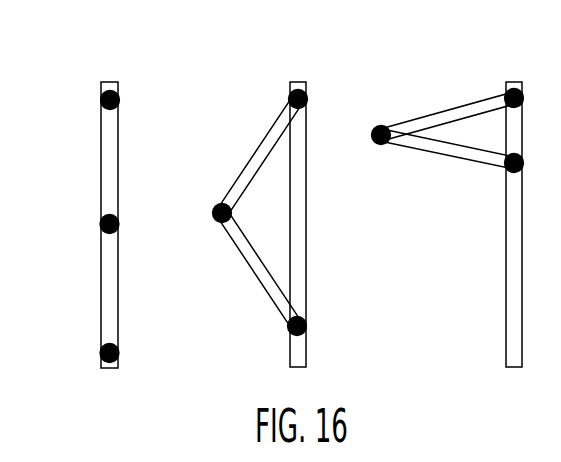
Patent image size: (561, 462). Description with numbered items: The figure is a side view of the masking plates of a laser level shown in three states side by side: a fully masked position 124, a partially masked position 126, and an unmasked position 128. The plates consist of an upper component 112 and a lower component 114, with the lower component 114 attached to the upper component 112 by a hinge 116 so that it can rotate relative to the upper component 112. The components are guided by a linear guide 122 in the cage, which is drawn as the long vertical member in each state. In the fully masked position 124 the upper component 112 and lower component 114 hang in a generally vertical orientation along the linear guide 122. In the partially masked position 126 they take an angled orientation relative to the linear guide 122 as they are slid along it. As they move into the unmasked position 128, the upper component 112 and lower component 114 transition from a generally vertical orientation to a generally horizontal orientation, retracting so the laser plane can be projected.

The fully masked position 124 is at (106, 42).
The partially masked position 126 is at (286, 42).
The unmasked position 128 is at (501, 42).
The upper component 112 is at (101, 140).
The lower component 114 is at (101, 300).
The hinge 116 is at (100, 224).
The linear guide 122 is at (305, 142).